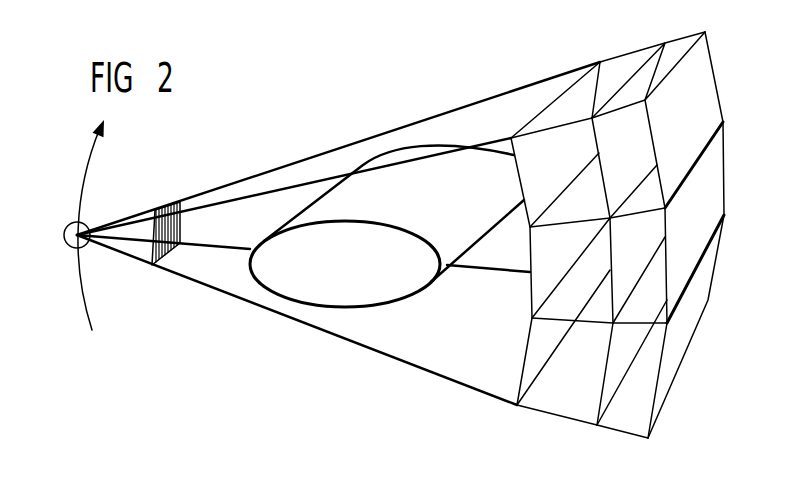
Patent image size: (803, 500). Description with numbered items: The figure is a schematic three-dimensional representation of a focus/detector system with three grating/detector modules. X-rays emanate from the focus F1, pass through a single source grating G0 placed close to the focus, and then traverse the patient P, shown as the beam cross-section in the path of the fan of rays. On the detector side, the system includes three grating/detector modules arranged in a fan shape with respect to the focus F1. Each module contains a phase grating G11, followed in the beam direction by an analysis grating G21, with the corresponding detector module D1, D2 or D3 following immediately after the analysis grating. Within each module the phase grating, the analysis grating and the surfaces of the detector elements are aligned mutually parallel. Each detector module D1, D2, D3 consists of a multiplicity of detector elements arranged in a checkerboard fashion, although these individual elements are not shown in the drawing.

The focus F1 is at (65, 225).
The source grating G0 is at (164, 207).
The patient P is at (387, 259).
The phase grating G11 is at (541, 238).
The analysis grating G21 is at (632, 238).
The detector module D1 is at (715, 118).
The detector module D2 is at (720, 222).
The detector module D3 is at (696, 326).